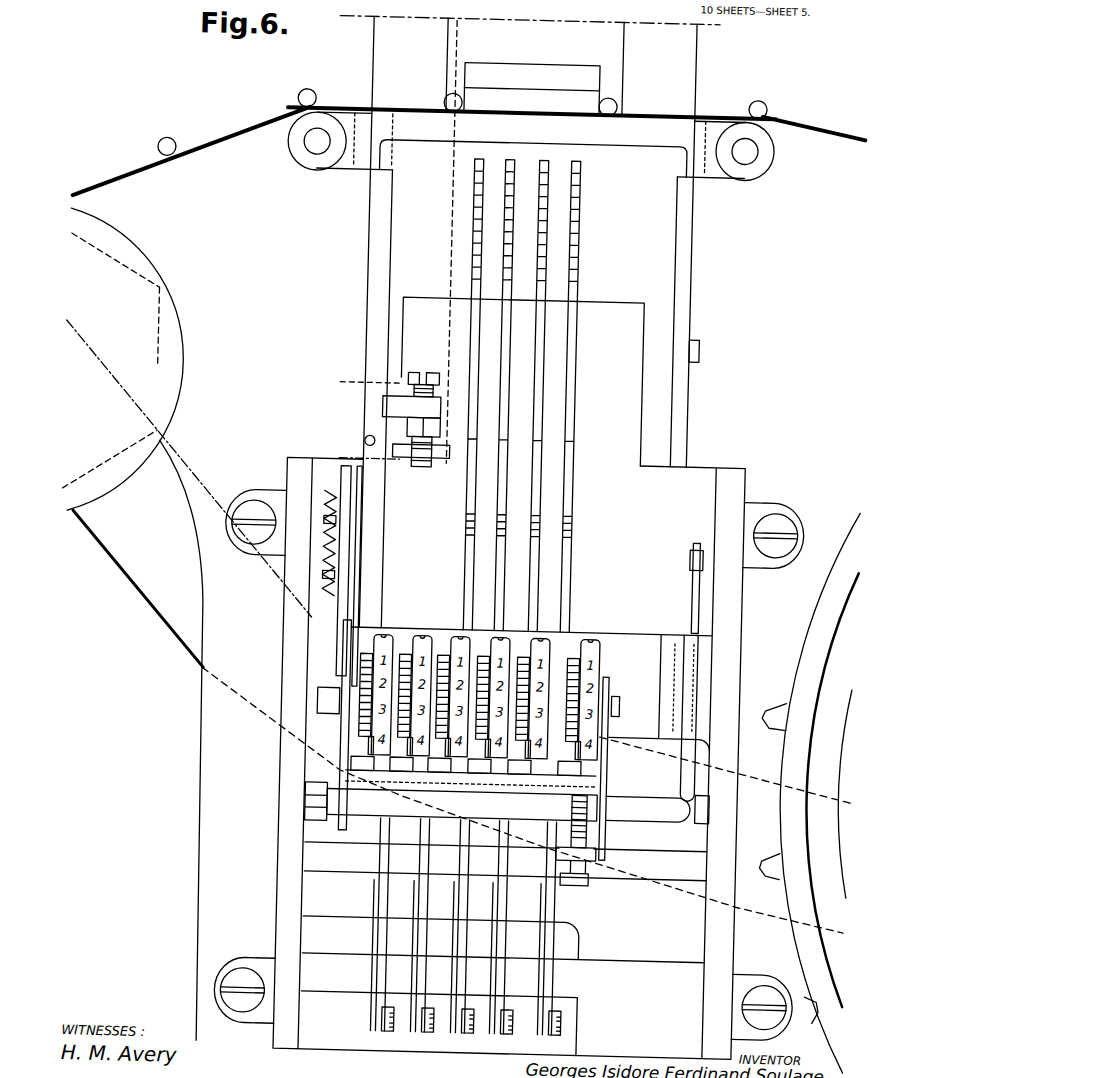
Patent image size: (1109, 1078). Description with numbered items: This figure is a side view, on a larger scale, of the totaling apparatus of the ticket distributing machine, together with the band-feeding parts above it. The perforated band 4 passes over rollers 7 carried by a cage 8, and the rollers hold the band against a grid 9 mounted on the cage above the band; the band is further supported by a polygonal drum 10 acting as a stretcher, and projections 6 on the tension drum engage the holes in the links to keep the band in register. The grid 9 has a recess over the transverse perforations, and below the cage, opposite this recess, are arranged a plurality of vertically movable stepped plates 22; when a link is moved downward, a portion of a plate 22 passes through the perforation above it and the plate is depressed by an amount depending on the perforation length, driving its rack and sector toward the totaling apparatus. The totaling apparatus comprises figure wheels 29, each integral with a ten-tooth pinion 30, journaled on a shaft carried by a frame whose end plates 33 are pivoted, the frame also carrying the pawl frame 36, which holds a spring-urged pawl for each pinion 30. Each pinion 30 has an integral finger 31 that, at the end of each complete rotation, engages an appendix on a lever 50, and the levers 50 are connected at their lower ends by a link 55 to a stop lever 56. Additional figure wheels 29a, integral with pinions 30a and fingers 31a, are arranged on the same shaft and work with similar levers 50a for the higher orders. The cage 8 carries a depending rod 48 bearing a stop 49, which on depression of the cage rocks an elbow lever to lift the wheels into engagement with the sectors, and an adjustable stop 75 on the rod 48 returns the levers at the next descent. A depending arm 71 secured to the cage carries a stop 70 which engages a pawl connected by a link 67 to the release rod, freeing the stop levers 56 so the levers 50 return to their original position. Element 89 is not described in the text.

The band 4 is at (222, 140).
The projections 6 is at (807, 792).
The rollers 7 is at (279, 157).
The cage 8 is at (533, 147).
The grid 9 is at (532, 89).
The polygonal drum 10 is at (125, 360).
The vertically movable plates 22 is at (498, 240).
The figure wheels 29 is at (458, 641).
The additional figure wheels 29a is at (419, 641).
The pinion 30 is at (583, 662).
The pinion 30a is at (400, 700).
The finger 31 is at (540, 697).
The finger 31a is at (400, 677).
The end plates 33 is at (349, 751).
The pawl carrying frame 36 is at (612, 771).
The depending rod 48 is at (364, 237).
The stop 49 is at (361, 443).
The levers 50 is at (558, 932).
The levers 50a is at (425, 925).
The link 55 is at (439, 1036).
The stop lever 56 is at (558, 973).
The link 67 is at (694, 593).
The stop 70 is at (693, 347).
The depending arm 71 is at (671, 262).
The adjustable stop 75 is at (433, 465).
The arm 89 is at (135, 739).